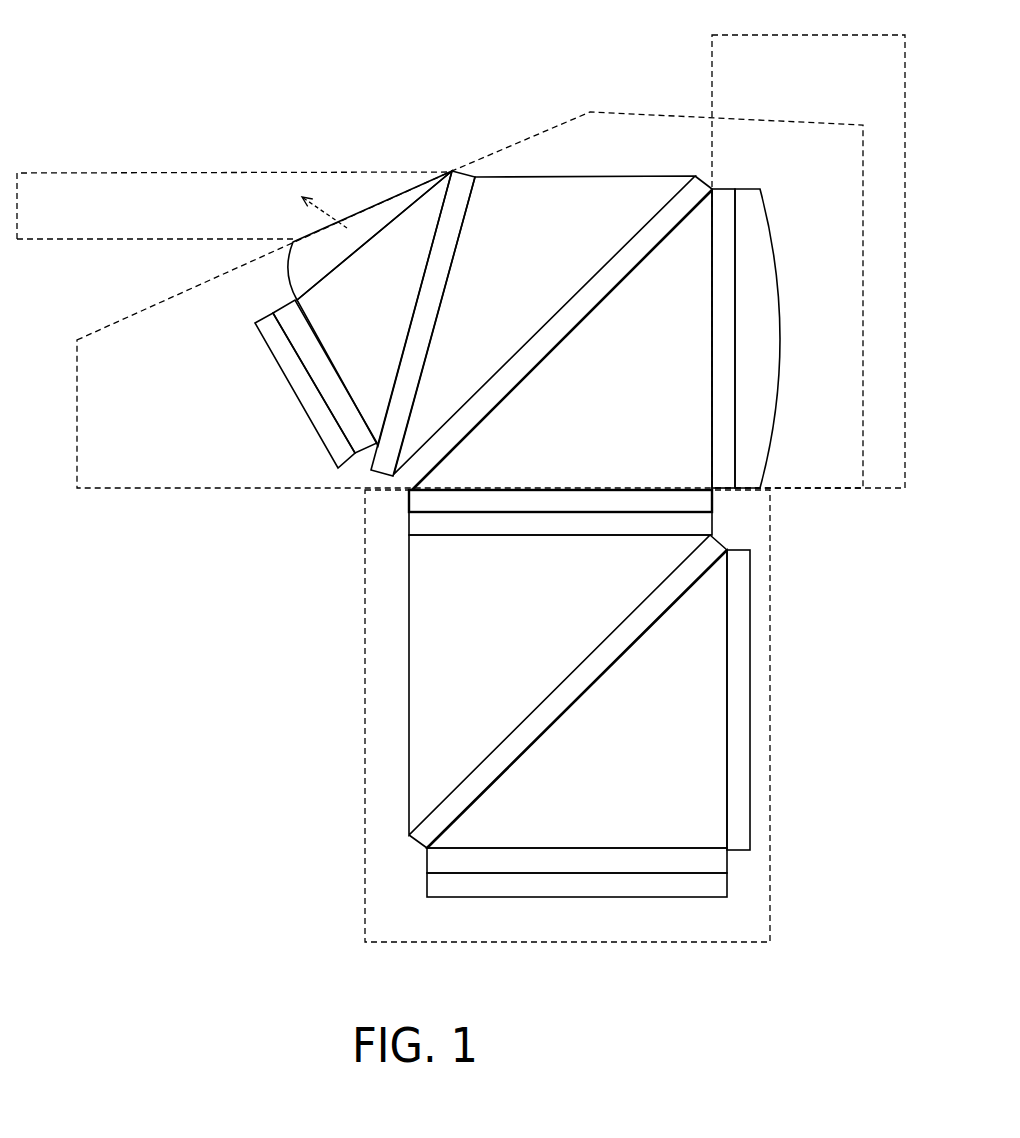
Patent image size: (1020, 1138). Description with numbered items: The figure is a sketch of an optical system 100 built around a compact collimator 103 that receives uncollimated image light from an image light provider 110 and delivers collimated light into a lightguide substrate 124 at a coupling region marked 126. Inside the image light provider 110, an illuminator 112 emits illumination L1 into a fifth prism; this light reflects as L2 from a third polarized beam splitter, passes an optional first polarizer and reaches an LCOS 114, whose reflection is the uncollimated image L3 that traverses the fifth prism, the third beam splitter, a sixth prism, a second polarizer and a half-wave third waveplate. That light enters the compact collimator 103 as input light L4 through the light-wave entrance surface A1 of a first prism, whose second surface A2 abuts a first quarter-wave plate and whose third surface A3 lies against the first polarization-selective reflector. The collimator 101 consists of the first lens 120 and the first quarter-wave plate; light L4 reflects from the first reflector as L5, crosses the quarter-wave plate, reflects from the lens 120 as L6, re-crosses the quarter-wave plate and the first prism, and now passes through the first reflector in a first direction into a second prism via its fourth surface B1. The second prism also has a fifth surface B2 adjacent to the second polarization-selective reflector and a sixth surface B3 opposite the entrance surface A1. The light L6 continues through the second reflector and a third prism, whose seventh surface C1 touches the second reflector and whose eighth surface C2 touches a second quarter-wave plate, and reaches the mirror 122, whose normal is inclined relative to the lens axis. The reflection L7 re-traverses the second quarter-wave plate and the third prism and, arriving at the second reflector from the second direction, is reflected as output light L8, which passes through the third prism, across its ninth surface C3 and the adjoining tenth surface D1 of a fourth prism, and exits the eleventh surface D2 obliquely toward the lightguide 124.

The optical system 100 is at (604, 70).
The collimator 101 is at (808, 261).
The compact collimator 103 is at (470, 300).
The image light provider 110 is at (567, 716).
The illuminator 112 is at (741, 700).
The LCOS 114 is at (577, 885).
The first lens 120 is at (757, 338).
The mirror 122 is at (305, 390).
The lightguide substrate 124 is at (234, 205).
The coupling-in surface of LOE 126 is at (385, 200).
The light-wave entrance surface A1 is at (710, 487).
The second surface A2 is at (710, 253).
The third surface A3 is at (680, 225).
The fourth surface B1 is at (604, 259).
The fifth surface B2 is at (450, 263).
The sixth surface B3 is at (518, 180).
The seventh surface C1 is at (428, 260).
The eighth surface C2 is at (306, 318).
The ninth surface C3 is at (360, 249).
The tenth surface D1 is at (437, 178).
The eleventh surface D2 is at (409, 198).
The illumination L1 is at (727, 700).
The reflected illumination L2 is at (558, 893).
The uncollimated image light L3 is at (530, 490).
The uncollimated input image light L4 is at (527, 380).
The reflected light L5 is at (773, 352).
The light-path in first direction L6 is at (275, 344).
The mirror-reflected light L7 is at (305, 328).
The output light L8 is at (415, 292).